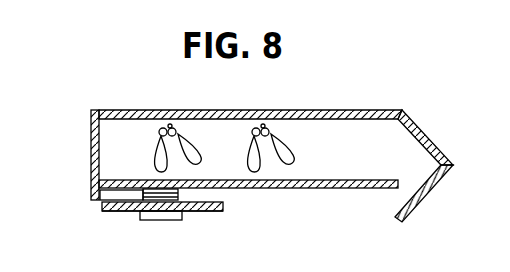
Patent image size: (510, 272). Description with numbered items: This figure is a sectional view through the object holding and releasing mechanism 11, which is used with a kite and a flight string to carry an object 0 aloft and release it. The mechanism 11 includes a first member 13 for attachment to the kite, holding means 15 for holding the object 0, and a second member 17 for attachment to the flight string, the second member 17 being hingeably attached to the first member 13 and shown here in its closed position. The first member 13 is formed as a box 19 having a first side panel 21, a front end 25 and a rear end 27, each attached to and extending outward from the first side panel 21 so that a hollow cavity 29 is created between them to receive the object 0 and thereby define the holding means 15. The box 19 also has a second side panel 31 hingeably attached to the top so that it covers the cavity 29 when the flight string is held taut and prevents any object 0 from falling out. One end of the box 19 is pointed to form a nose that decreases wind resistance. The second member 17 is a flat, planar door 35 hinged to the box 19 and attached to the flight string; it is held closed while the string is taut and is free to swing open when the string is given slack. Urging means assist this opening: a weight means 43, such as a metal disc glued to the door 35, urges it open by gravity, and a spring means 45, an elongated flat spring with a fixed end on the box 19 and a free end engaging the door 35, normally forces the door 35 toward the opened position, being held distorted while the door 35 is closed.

The object holding and releasing mechanism 11 is at (362, 58).
The first member 13 is at (140, 103).
The holding means 15 is at (312, 150).
The second member 17 is at (115, 221).
The box 19 is at (448, 108).
The first side wall or panel 21 is at (308, 110).
The front end 25 is at (435, 145).
The rear end 27 is at (90, 142).
The hollow space or cavity 29 is at (363, 163).
The second side wall or panel 31 is at (315, 189).
The cover or door 35 is at (203, 212).
The weight means 43 is at (163, 221).
The spring means 45 is at (178, 195).
The object to be released 0 is at (250, 155).